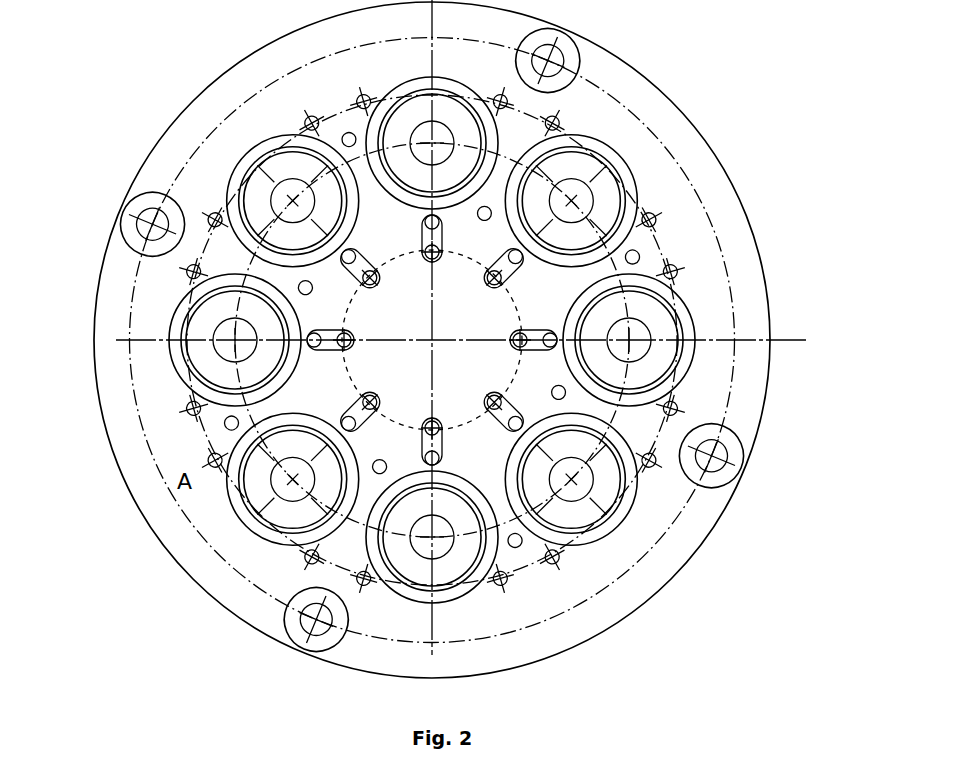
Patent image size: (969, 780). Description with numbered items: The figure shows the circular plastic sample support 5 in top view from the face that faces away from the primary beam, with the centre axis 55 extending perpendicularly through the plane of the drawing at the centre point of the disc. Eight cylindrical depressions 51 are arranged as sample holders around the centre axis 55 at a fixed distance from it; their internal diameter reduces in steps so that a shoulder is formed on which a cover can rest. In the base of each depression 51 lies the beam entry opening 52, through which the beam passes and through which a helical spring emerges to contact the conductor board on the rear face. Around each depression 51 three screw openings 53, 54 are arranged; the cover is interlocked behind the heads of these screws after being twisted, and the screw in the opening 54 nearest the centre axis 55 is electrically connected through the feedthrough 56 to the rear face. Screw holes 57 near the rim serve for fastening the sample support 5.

The sample support 5 is at (663, 78).
The depression 51 is at (202, 318).
The beam entry opening 52 is at (222, 352).
The screw opening 53 is at (193, 408).
The screw opening with contact 54 is at (515, 425).
The centre axis 55 is at (432, 340).
The feedthrough 56 is at (497, 401).
The screw hole 57 is at (147, 212).